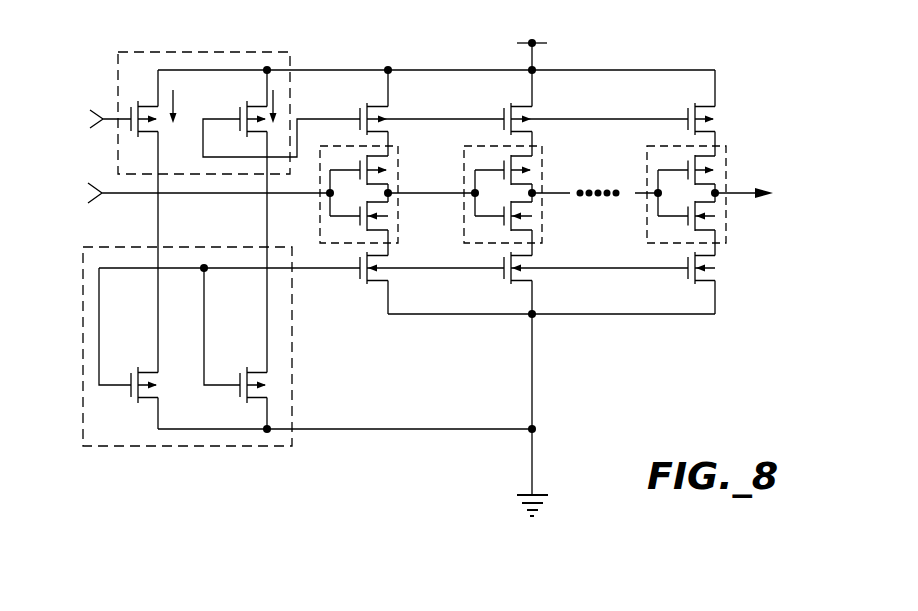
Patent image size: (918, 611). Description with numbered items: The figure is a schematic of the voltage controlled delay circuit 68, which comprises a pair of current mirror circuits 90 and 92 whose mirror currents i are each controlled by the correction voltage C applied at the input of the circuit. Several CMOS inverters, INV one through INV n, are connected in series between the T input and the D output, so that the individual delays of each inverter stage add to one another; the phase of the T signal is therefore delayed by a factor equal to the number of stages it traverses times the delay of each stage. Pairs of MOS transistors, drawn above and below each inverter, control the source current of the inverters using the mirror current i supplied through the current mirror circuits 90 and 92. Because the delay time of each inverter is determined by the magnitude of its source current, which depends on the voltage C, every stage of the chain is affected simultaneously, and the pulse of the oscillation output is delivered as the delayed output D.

The voltage controlled delay circuit 68 is at (104, 40).
The current mirror circuit 90 is at (190, 52).
The current mirror circuit 92 is at (173, 447).